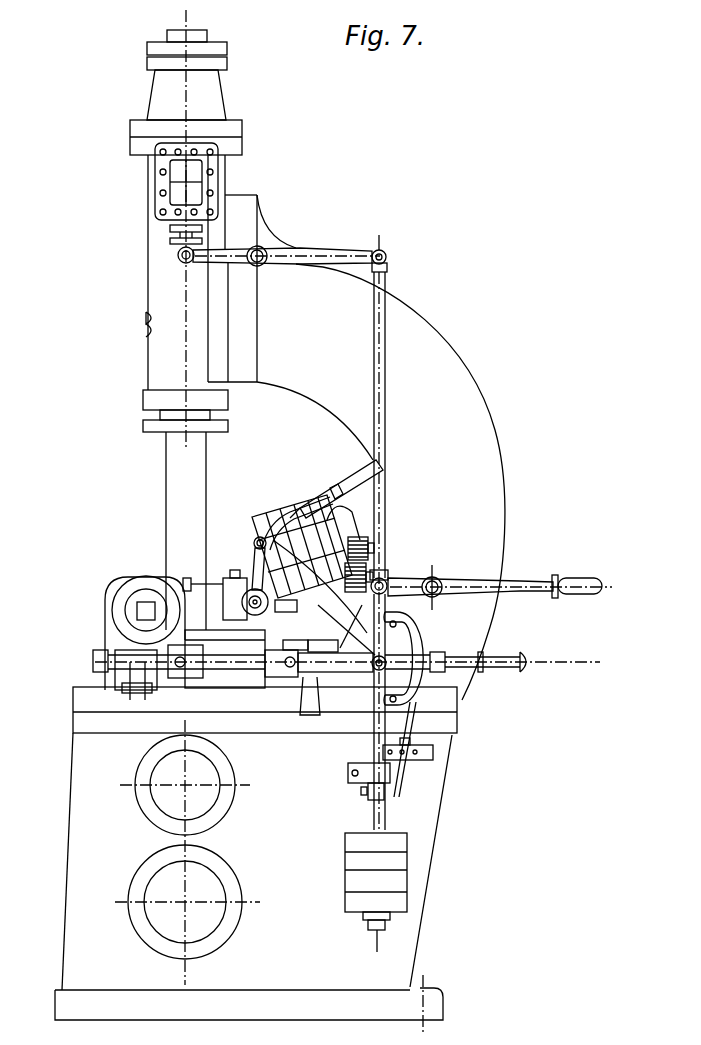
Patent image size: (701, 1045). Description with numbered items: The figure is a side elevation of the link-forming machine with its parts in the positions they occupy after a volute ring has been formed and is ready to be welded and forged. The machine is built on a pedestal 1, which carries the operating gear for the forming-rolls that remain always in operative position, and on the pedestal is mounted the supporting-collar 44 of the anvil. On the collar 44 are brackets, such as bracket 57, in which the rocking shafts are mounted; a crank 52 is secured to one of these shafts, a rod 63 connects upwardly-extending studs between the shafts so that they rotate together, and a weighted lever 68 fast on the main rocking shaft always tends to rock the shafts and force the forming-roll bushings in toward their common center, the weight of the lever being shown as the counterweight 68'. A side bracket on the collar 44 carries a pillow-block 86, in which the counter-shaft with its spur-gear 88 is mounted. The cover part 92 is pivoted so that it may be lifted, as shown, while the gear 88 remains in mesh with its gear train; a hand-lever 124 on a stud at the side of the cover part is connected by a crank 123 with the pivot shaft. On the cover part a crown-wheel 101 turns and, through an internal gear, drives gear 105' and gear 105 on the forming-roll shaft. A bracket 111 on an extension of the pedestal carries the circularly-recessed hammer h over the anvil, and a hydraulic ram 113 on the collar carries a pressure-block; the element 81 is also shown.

The pedestal 1 is at (78, 902).
The supporting-collar 44 is at (85, 694).
The crank 52 is at (131, 681).
The rod 63 is at (225, 662).
The weighted lever 68 is at (487, 655).
The weight 68' is at (364, 892).
The bracket 81 is at (286, 612).
The pillow-block 86 is at (226, 600).
The spur-gear 88 is at (295, 639).
The bracket 57 is at (312, 645).
The cover part 92 is at (313, 575).
The crown-wheel 101 is at (306, 509).
The gear 105 is at (362, 540).
The gear 105' is at (359, 586).
The bracket 111 is at (495, 553).
The hydraulic ram 113 is at (128, 623).
The crank 123 is at (250, 580).
The hand-lever 124 is at (355, 480).
The hammer h is at (200, 585).